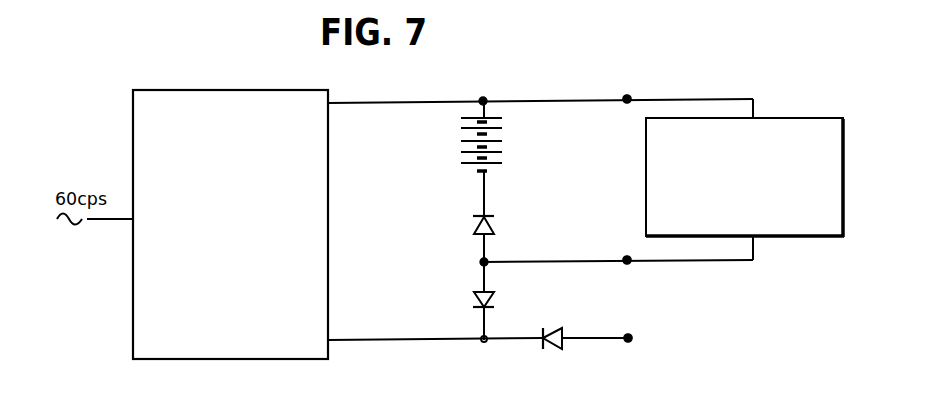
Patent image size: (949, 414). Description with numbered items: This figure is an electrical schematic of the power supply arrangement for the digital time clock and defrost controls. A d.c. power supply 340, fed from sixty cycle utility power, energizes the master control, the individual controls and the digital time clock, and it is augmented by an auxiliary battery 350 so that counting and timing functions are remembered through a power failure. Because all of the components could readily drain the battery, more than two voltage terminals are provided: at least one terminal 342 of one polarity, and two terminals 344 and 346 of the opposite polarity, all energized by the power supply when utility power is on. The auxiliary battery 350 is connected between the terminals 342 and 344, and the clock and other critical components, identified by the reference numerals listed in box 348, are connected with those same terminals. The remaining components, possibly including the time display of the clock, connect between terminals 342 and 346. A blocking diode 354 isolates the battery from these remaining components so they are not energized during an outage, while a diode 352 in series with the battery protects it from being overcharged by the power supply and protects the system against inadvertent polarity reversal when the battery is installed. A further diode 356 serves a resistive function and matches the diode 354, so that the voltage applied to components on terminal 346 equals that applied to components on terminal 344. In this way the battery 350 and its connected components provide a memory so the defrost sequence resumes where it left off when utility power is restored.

The d.c. power supply 340 is at (248, 90).
The terminal 342 is at (627, 95).
The terminal 344 is at (627, 256).
The terminal 346 is at (626, 320).
The box 348 is at (846, 183).
The auxiliary battery 350 is at (470, 147).
The diode 352 is at (473, 224).
The blocking diode 354 is at (474, 298).
The diode 356 is at (543, 346).